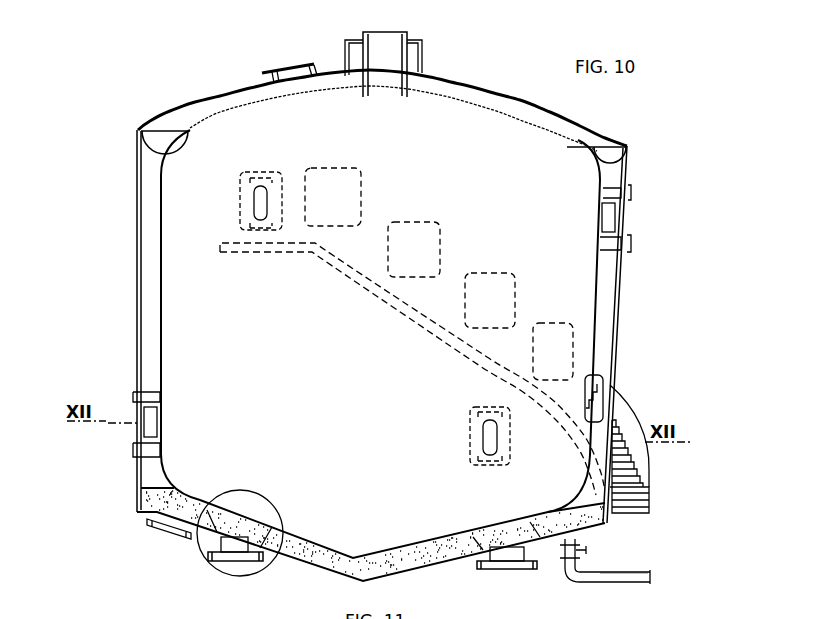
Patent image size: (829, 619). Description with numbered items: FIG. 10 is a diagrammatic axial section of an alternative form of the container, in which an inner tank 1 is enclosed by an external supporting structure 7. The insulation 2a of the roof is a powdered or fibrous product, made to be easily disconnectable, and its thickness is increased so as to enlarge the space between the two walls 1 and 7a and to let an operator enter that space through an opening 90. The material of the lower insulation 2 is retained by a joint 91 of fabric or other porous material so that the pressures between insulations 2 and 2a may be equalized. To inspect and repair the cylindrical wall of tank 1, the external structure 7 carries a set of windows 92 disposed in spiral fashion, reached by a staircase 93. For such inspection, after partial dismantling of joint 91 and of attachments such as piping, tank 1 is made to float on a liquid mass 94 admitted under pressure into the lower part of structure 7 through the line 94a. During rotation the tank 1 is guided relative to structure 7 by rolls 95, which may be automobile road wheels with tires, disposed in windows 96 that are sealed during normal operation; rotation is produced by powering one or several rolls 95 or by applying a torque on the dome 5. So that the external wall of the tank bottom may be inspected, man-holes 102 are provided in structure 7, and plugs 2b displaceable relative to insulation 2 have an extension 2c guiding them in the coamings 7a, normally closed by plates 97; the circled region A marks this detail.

The tank 1 is at (163, 337).
The insulation 2 is at (146, 259).
The insulation of the roof 2a is at (507, 105).
The plugs 2b is at (223, 522).
The extension 2c is at (236, 533).
The dome 5 is at (407, 53).
The external structure 7 is at (137, 336).
The coamings 7a is at (192, 103).
The opening 90 is at (292, 73).
The joint 91 is at (610, 168).
The windows 92 is at (362, 188).
The staircase 93 is at (423, 317).
The liquid mass 94 is at (605, 524).
The line 94a is at (617, 582).
The rolls 95 is at (250, 193).
The windows 96 is at (240, 218).
The plates 97 is at (233, 562).
The man-holes 102 is at (163, 537).
The detail circle A is at (265, 570).